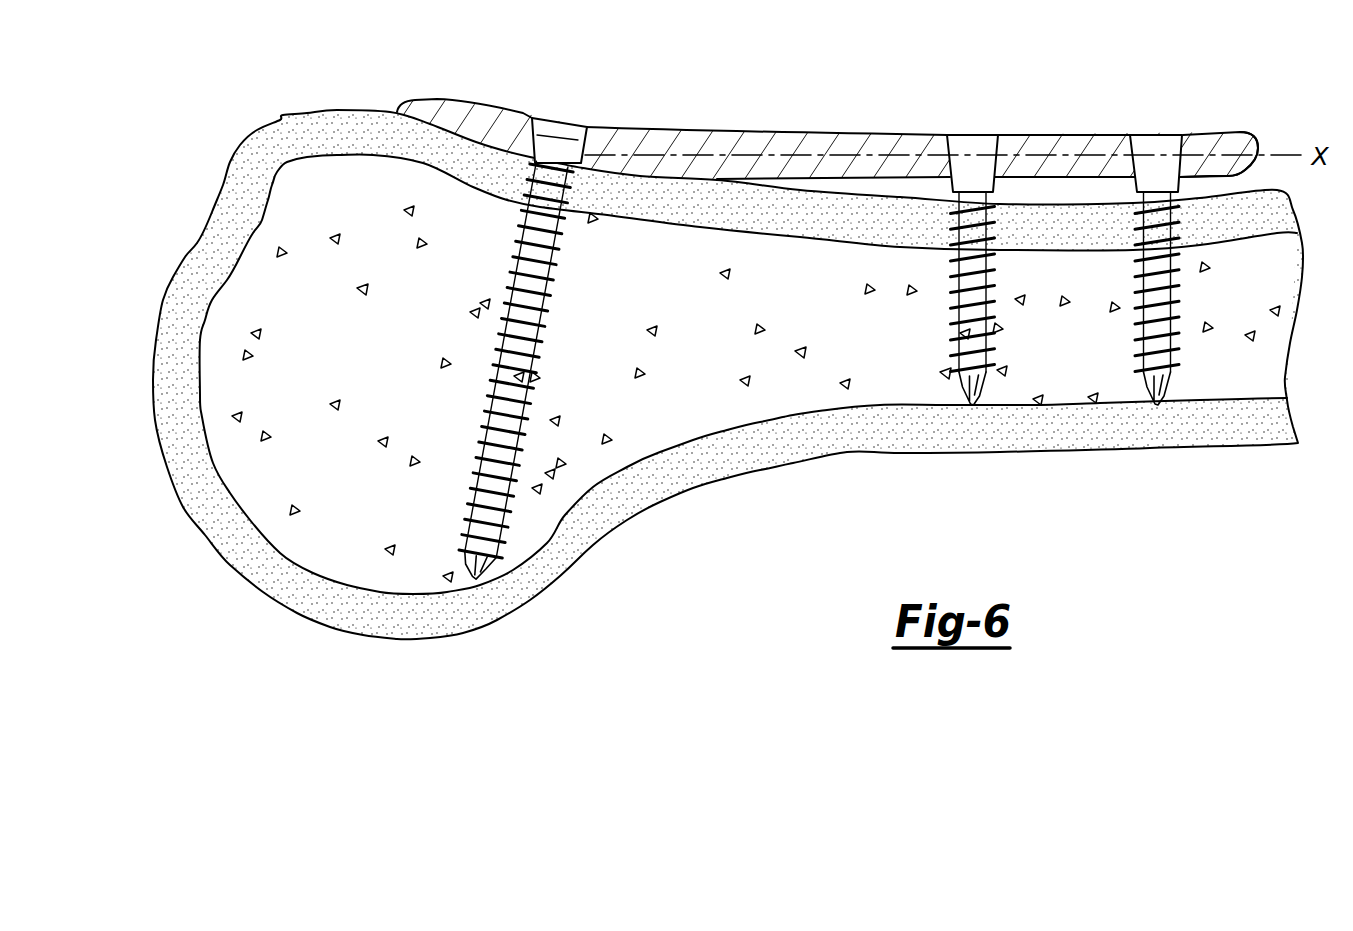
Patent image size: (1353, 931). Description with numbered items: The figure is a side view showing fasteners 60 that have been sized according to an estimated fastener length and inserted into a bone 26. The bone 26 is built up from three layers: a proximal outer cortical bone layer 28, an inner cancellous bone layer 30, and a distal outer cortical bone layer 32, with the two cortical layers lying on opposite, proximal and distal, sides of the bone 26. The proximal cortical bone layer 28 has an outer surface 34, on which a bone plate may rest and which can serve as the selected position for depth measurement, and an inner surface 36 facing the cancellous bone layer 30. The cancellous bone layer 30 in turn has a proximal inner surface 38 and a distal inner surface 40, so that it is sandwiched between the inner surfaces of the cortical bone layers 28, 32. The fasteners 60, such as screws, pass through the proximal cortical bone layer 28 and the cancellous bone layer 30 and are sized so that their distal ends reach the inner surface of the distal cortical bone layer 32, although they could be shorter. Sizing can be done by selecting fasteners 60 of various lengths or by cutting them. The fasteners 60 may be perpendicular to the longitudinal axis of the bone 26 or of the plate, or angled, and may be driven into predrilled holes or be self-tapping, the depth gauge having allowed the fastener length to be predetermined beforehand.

The bone 26 is at (269, 112).
The proximal outer cortical bone layer 28 is at (1079, 207).
The inner cancellous bone layer 30 is at (1047, 370).
The distal outer cortical bone layer 32 is at (1045, 455).
The outer surface 34 is at (875, 132).
The inner surface 36 is at (1233, 130).
The proximal inner surface 38 is at (1210, 177).
The distal inner surface 40 is at (537, 118).
The fasteners 60 is at (537, 300).